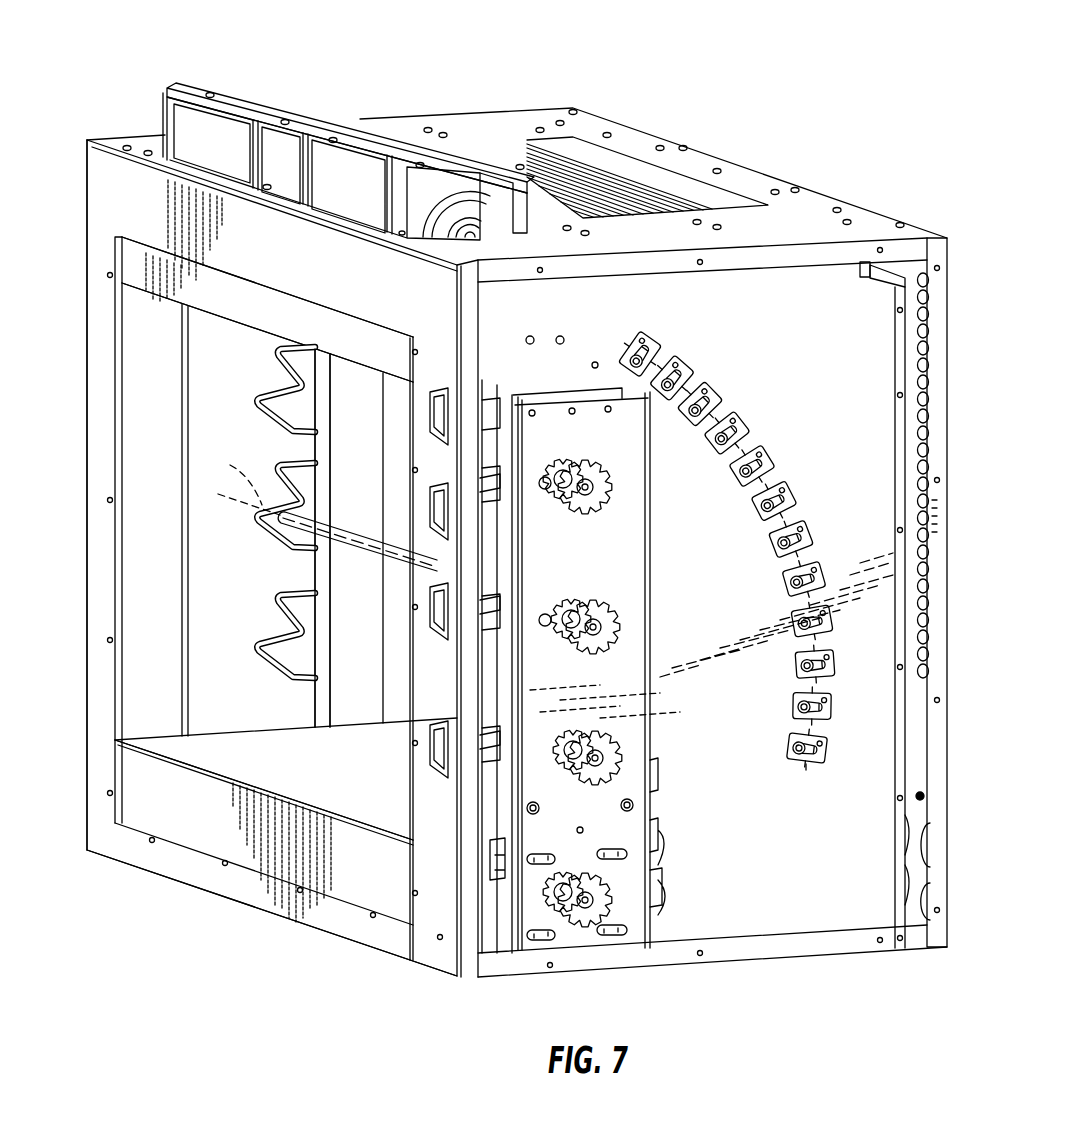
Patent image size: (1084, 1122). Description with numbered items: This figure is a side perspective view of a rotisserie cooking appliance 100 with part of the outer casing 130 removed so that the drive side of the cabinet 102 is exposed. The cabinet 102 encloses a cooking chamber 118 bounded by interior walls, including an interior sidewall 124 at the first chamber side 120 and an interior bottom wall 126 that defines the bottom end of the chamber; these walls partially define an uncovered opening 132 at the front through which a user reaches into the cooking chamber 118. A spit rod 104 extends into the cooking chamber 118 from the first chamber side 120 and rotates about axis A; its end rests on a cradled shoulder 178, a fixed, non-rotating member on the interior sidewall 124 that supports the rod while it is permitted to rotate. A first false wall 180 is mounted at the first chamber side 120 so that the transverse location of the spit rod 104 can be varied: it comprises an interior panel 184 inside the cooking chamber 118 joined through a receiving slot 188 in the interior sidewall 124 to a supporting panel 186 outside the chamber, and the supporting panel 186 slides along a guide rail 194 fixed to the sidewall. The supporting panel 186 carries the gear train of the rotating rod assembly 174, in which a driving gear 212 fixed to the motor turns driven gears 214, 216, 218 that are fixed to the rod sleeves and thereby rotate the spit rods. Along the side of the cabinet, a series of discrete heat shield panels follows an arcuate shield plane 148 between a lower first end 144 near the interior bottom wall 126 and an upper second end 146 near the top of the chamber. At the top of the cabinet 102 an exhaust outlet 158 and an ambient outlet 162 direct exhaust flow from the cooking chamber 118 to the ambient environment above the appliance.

The cooking appliance 100 is at (781, 62).
The cabinet 102 is at (935, 237).
The spit rod 104 is at (316, 548).
The cooking chamber 118 is at (377, 667).
The first chamber side 120 is at (140, 557).
The interior sidewall 124 is at (140, 498).
The interior bottom wall 126 is at (220, 757).
The outer casing 130 is at (845, 220).
The opening 132 is at (112, 677).
The first end 144 is at (799, 790).
The second end 146 is at (607, 351).
The shield plane 148 is at (800, 773).
The exhaust outlet 158 is at (285, 167).
The ambient outlet 162 is at (347, 145).
The rotating rod assembly 174 is at (618, 948).
The cradled shoulder 178 is at (300, 556).
The first false wall 180 is at (205, 355).
The interior panel 184 is at (212, 400).
The supporting panel 186 is at (640, 545).
The receiving slot 188 is at (493, 740).
The guide rail 194 is at (495, 440).
The driving gear 212 is at (592, 900).
The driven gear 214 is at (607, 762).
The driven gear 216 is at (605, 627).
The driven gear 218 is at (605, 483).